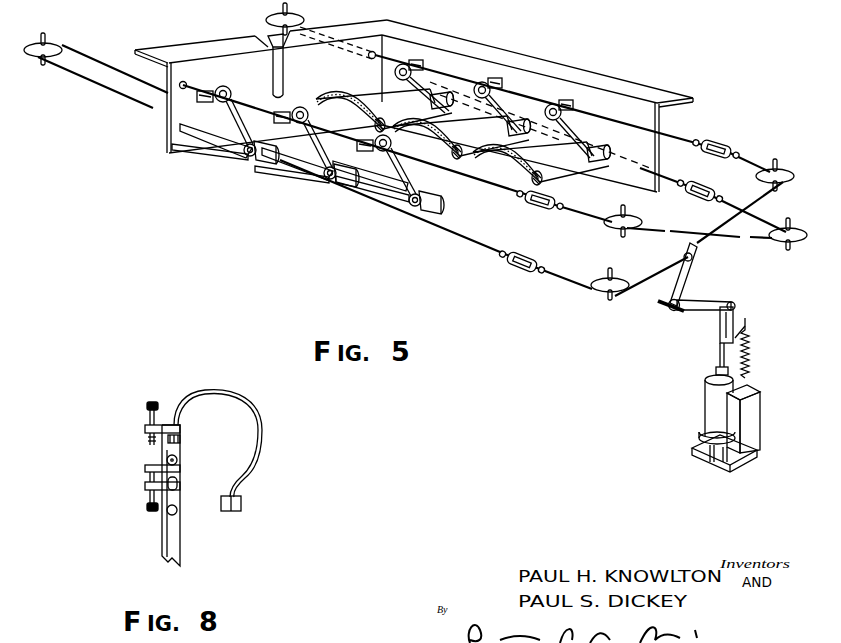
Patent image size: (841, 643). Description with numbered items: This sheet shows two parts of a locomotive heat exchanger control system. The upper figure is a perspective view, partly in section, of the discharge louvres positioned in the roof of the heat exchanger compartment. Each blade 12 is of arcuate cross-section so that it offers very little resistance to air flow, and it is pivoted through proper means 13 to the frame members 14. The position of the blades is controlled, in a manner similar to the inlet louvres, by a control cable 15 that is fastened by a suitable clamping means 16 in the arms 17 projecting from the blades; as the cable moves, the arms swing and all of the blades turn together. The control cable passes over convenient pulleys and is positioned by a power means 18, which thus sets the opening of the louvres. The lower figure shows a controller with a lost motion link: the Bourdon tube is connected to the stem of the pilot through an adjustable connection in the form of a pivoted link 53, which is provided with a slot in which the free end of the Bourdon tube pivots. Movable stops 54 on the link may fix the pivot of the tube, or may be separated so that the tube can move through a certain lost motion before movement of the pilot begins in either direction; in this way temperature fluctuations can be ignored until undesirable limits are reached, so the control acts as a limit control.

In FIG. 5, the blade 12 is at (390, 187).
In FIG. 5, the pivot means 13 is at (612, 150).
In FIG. 5, the frame members 14 is at (687, 102).
In FIG. 5, the control cable 15 is at (541, 97).
In FIG. 5, the clamping means 16 is at (497, 83).
In FIG. 5, the arms 17 is at (437, 93).
In FIG. 5, the power means 18 is at (703, 410).
In FIG. 8, the pivoted link 53 is at (180, 452).
In FIG. 8, the movable stops 54 is at (145, 403).